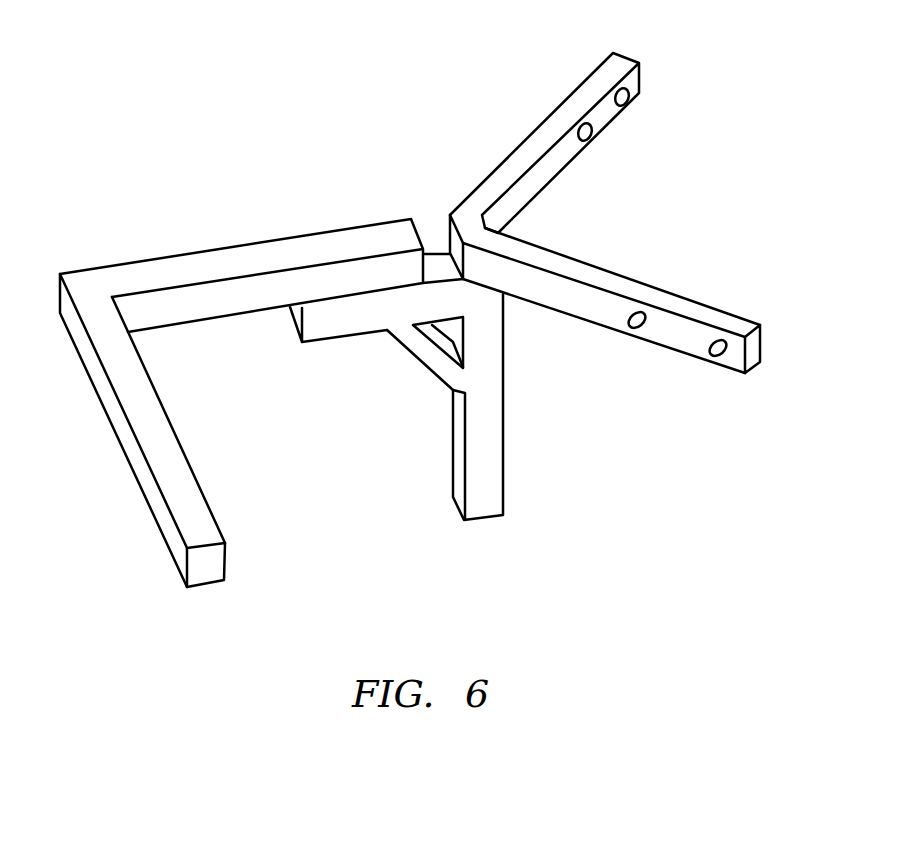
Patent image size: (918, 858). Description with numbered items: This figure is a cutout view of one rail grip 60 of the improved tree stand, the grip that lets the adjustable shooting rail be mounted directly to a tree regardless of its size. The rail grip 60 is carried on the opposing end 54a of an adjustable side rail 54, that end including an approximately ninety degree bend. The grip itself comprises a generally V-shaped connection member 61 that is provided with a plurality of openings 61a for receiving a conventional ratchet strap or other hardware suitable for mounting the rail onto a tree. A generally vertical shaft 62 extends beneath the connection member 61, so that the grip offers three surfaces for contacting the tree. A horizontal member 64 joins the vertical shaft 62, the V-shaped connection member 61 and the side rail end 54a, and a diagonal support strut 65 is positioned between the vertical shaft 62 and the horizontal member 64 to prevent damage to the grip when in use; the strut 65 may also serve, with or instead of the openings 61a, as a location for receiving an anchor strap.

The rail grip 60 is at (378, 115).
The adjustable side rail 54 is at (177, 482).
The opposing end of side rail 54a is at (218, 263).
The V-shaped connection member 61 is at (522, 280).
The openings 61a is at (590, 135).
The vertical shaft 62 is at (483, 445).
The horizontal member 64 is at (338, 322).
The diagonal support strut 65 is at (442, 365).